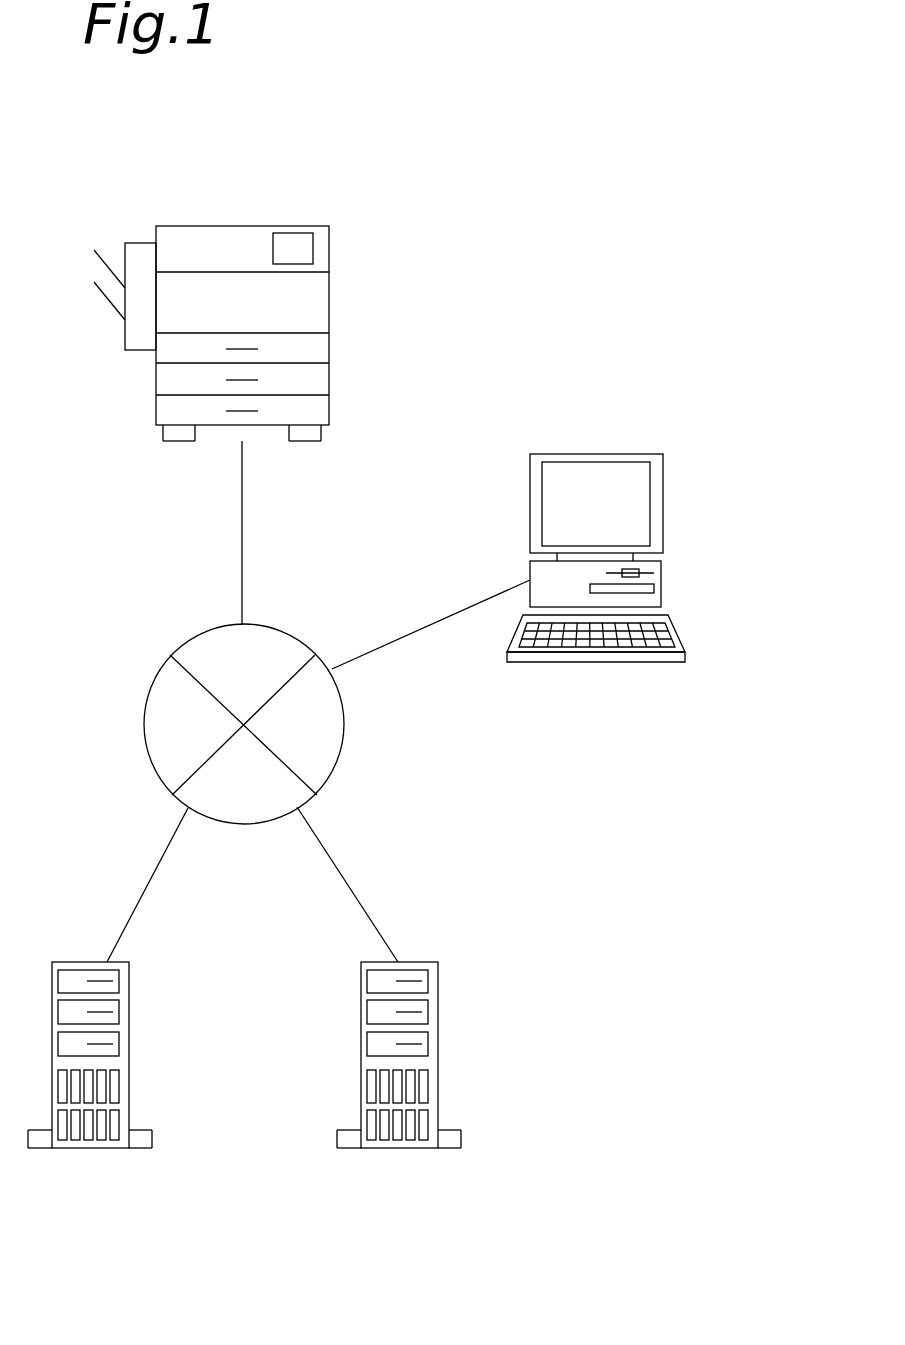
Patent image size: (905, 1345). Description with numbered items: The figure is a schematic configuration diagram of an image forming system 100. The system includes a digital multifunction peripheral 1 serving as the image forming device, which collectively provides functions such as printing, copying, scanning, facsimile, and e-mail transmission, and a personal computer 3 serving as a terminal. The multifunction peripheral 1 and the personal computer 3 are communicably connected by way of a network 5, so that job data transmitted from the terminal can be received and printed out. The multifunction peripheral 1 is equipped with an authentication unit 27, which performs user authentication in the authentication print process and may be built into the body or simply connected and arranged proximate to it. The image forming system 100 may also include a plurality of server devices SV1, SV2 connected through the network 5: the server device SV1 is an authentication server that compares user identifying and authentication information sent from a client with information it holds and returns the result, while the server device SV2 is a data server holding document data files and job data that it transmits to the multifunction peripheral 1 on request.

The image forming system 100 is at (662, 173).
The digital multifunction peripheral 1 is at (281, 326).
The authentication unit 27 is at (293, 249).
The personal computer 3 is at (676, 500).
The network 5 is at (361, 722).
The server device SV1 is at (92, 1161).
The server device SV2 is at (400, 1161).